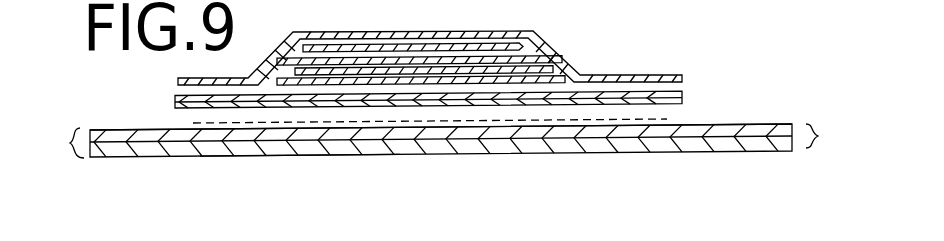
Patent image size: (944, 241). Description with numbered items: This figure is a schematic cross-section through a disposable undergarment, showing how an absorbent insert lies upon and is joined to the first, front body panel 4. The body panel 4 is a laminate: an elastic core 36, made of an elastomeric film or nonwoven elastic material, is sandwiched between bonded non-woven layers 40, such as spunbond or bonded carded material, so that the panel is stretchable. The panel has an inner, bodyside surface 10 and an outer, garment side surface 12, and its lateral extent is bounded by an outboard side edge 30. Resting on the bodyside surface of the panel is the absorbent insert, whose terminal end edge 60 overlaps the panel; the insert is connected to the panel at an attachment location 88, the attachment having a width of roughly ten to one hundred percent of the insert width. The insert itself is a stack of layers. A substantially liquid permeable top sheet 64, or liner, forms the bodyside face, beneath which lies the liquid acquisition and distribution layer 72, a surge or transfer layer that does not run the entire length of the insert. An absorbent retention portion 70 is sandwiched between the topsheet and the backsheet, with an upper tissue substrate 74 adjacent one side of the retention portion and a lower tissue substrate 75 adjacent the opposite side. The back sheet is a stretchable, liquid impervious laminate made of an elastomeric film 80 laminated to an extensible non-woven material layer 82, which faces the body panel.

The first front body panel 4 is at (767, 148).
The inner bodyside surface 10 is at (757, 123).
The outer garment side surface 12 is at (719, 150).
The outboard side edge 30 is at (72, 128).
The elastic core 36 is at (288, 157).
The layer 40 is at (652, 150).
The first terminal end edge 60 is at (543, 97).
The top sheet 64 is at (510, 32).
The retention portion 70 is at (553, 68).
The liquid acquisition and distribution layer 72 is at (460, 47).
The upper tissue substrate 74 is at (548, 66).
The lower tissue substrate 75 is at (480, 84).
The elastomeric film 80 is at (620, 92).
The extensible non-woven material layer 82 is at (425, 107).
The attachment location 88 is at (674, 120).